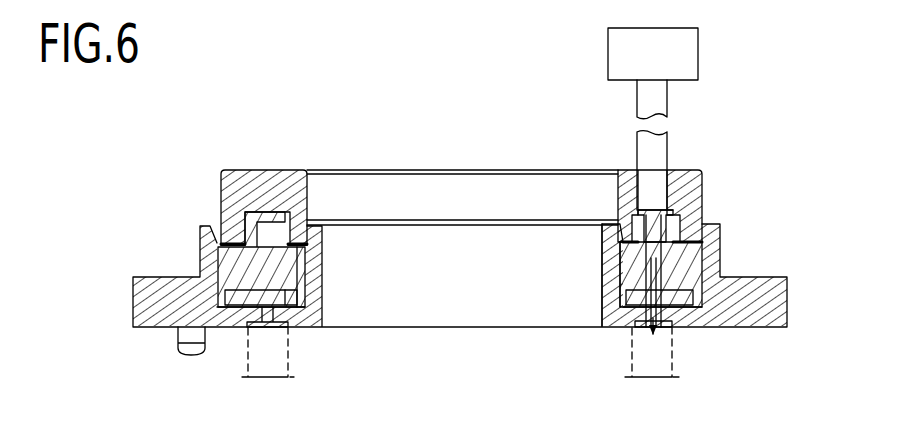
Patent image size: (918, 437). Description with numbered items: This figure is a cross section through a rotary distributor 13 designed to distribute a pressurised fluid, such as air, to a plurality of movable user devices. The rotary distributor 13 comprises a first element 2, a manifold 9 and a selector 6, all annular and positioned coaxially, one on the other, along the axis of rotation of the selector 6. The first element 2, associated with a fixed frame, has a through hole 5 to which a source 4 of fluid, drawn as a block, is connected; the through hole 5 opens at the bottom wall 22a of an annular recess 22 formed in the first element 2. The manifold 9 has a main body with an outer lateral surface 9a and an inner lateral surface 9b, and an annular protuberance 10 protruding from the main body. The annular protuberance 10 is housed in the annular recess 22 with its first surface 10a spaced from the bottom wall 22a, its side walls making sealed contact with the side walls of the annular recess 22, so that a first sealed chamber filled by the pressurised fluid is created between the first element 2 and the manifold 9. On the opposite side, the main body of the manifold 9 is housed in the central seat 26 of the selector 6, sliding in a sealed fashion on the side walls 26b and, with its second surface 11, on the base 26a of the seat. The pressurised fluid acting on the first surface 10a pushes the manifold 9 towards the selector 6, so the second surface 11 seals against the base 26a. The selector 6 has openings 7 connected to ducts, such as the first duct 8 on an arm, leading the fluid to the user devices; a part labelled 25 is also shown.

The first element 2 is at (267, 163).
The source of fluid 4 is at (658, 64).
The through hole 5 is at (640, 183).
The selector 6 is at (793, 322).
The openings 7 is at (250, 322).
The first duct 8 is at (265, 350).
The manifold 9 is at (245, 262).
The outer lateral surface 9a is at (209, 271).
The inner lateral surface 9b is at (314, 268).
The annular protuberance 10 is at (669, 228).
The first surface 10a is at (670, 209).
The second surface 11 is at (236, 312).
The rotary distributor 13 is at (745, 140).
The annular recess 22 is at (264, 226).
The bottom wall 22a is at (244, 238).
The guide sleeve 25 is at (611, 260).
The central seat 26 is at (702, 283).
The base 26a is at (287, 302).
The side walls 26b is at (645, 318).